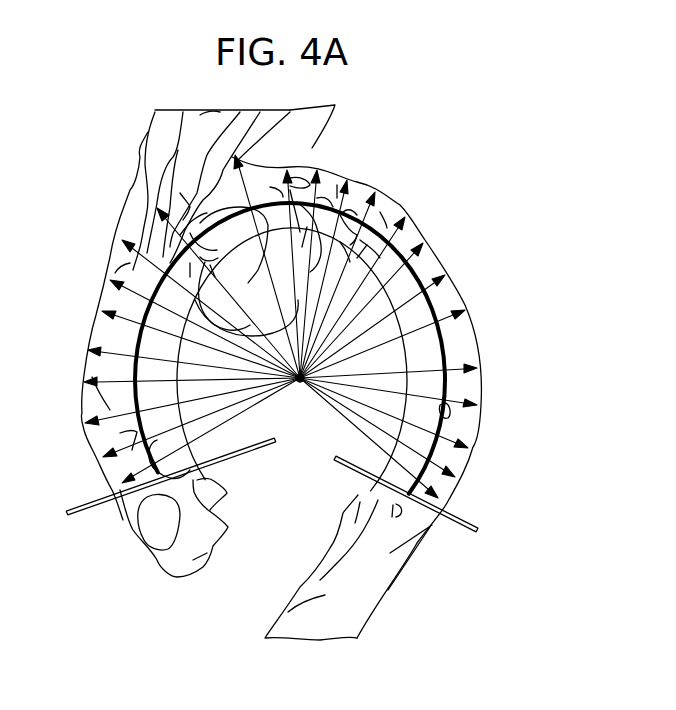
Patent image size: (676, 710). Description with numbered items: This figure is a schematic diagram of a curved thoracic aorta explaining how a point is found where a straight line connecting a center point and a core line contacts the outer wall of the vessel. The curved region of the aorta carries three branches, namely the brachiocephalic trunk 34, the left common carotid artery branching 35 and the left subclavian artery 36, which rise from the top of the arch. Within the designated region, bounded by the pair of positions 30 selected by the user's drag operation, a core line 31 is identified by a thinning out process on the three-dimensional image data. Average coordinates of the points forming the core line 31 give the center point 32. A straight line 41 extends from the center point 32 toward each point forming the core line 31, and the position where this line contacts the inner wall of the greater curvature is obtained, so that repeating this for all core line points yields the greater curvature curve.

The pair of positions 30 is at (255, 450).
The core line 31 is at (450, 292).
The center point 32 is at (300, 383).
The brachiocephalic trunk 34 is at (125, 193).
The left common carotid artery branching 35 is at (142, 158).
The left subclavian artery 36 is at (267, 127).
The straight line 41 is at (112, 515).